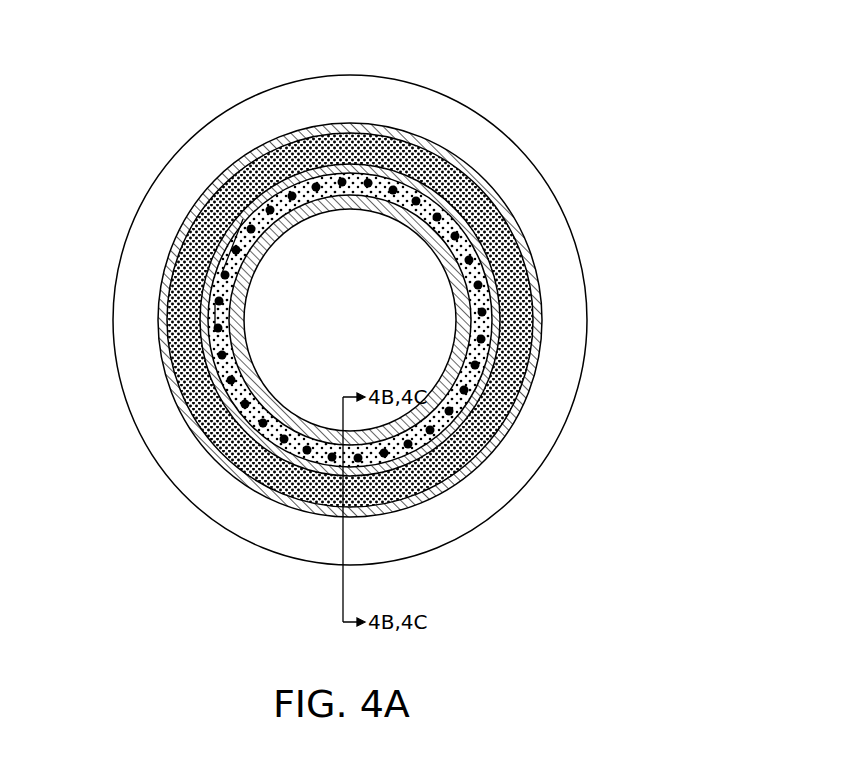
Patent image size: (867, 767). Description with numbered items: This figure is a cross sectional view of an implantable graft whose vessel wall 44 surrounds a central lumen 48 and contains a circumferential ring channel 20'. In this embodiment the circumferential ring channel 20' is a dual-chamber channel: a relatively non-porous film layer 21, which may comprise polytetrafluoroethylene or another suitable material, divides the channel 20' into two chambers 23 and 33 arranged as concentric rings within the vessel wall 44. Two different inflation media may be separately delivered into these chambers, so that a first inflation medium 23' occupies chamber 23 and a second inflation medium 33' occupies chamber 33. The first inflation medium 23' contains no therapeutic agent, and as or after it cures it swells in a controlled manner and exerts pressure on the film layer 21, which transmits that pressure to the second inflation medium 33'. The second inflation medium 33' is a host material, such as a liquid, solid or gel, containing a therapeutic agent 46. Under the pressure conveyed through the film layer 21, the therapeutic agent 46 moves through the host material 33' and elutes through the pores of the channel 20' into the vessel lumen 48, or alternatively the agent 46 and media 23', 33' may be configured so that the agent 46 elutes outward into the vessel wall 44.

The vessel wall 44 is at (565, 340).
The chamber 23 is at (420, 320).
The first inflation medium 23' is at (420, 320).
The non-porous film layer 21 is at (452, 433).
The circumferential ring channel 20' is at (376, 320).
The chamber 33 is at (351, 246).
The second inflation medium 33' is at (351, 246).
The therapeutic agent 46 is at (202, 293).
The lumen 48 is at (268, 380).